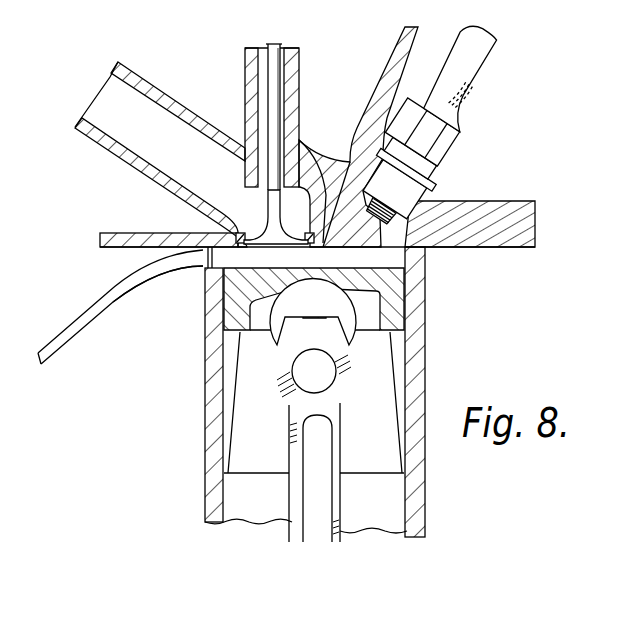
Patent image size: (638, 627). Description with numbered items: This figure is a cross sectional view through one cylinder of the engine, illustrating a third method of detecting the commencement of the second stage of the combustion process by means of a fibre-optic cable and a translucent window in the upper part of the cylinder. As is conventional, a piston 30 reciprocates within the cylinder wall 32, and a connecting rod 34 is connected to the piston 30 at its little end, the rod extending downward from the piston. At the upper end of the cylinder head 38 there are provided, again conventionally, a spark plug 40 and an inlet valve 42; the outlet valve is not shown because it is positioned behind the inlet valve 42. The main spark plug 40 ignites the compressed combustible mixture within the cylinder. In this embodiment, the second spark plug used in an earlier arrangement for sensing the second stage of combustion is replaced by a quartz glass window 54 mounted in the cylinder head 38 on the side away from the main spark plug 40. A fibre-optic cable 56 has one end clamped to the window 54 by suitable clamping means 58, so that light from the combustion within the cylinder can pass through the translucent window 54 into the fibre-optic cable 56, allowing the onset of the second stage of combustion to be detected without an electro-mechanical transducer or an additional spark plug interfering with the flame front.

The piston 30 is at (395, 313).
The cylinder wall 32 is at (412, 372).
The connecting rod 34 is at (325, 504).
The cylinder head 38 is at (384, 247).
The spark plug 40 is at (452, 132).
The inlet valve 42 is at (268, 211).
The quartz glass window 54 is at (207, 270).
The fibre-optic cable 56 is at (70, 342).
The clamping means 58 is at (197, 277).